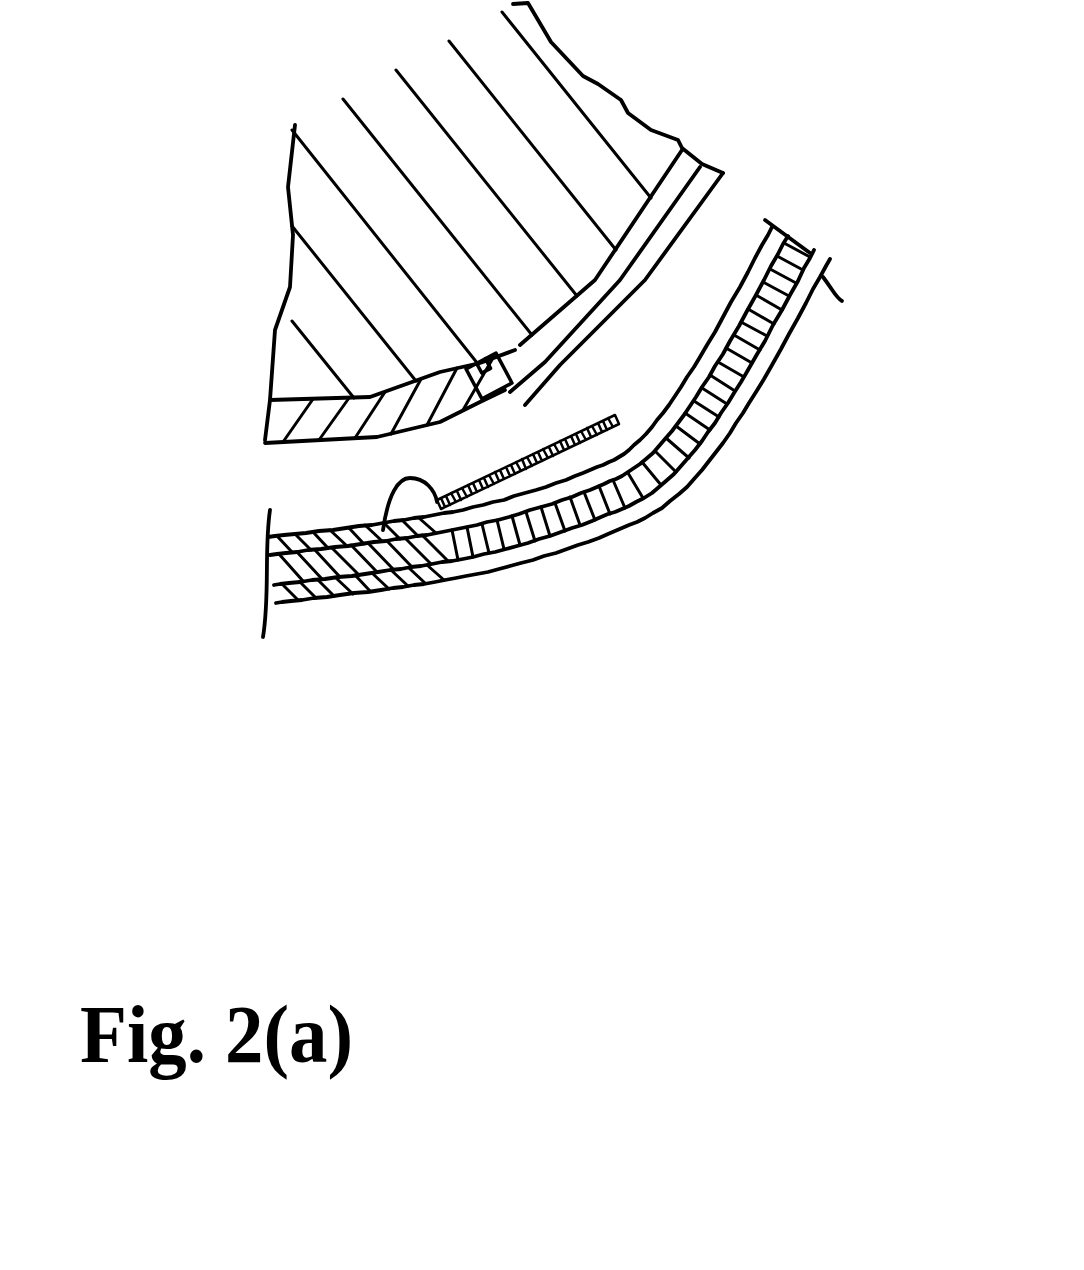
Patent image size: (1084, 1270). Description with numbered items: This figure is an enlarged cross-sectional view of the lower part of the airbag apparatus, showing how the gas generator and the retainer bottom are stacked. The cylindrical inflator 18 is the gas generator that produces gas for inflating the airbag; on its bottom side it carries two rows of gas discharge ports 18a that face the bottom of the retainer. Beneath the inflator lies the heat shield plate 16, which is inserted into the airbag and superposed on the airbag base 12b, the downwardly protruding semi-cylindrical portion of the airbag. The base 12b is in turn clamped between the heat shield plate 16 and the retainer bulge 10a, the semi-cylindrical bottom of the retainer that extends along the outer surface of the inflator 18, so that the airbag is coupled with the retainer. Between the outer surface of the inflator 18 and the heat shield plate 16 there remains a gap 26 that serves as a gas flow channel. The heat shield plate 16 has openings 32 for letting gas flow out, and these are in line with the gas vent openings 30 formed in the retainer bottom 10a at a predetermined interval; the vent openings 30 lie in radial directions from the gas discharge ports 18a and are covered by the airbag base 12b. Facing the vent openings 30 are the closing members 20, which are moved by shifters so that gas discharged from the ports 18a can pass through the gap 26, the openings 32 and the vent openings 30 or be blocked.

The inflator 18 is at (628, 110).
The gas discharge ports 18a is at (503, 392).
The heat shield plate 16 is at (757, 277).
The airbag base 12b is at (800, 253).
The bulge 10a is at (780, 362).
The openings 32 is at (596, 527).
The gas vent openings 30 is at (553, 540).
The closing members 20 is at (391, 558).
The gap 26 is at (313, 492).